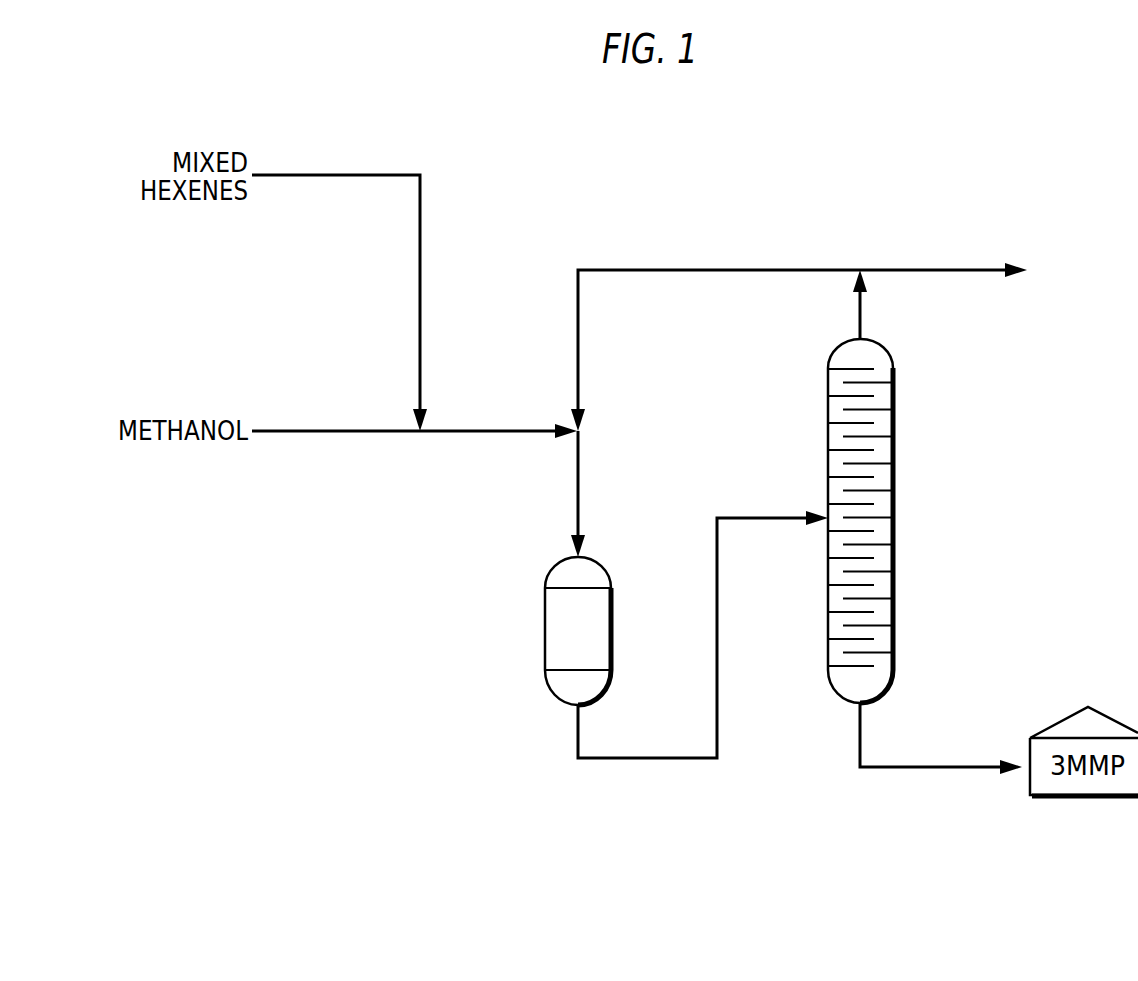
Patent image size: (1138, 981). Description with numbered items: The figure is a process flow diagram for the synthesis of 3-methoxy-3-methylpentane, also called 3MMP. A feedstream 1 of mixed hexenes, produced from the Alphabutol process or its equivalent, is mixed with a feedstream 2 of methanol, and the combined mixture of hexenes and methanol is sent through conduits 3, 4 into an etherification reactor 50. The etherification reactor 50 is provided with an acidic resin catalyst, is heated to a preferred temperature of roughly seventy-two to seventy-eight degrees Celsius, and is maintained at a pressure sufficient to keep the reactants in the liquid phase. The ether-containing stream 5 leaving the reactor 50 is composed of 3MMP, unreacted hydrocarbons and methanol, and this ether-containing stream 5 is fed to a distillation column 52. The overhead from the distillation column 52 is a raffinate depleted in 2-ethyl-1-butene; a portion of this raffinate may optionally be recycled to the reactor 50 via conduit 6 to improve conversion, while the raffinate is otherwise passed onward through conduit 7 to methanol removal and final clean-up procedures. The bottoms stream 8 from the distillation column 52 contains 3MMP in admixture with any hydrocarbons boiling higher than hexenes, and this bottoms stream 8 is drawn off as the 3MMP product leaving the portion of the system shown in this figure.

The feedstream of mixed hexenes 1 is at (341, 173).
The feedstream of methanol 2 is at (341, 429).
The conduit 3 is at (497, 429).
The conduit 4 is at (582, 481).
The ether-containing stream 5 is at (650, 756).
The conduit 6 is at (690, 268).
The conduit 7 is at (944, 268).
The bottoms stream 8 is at (943, 765).
The etherification reactor 50 is at (544, 625).
The distillation column 52 is at (895, 398).